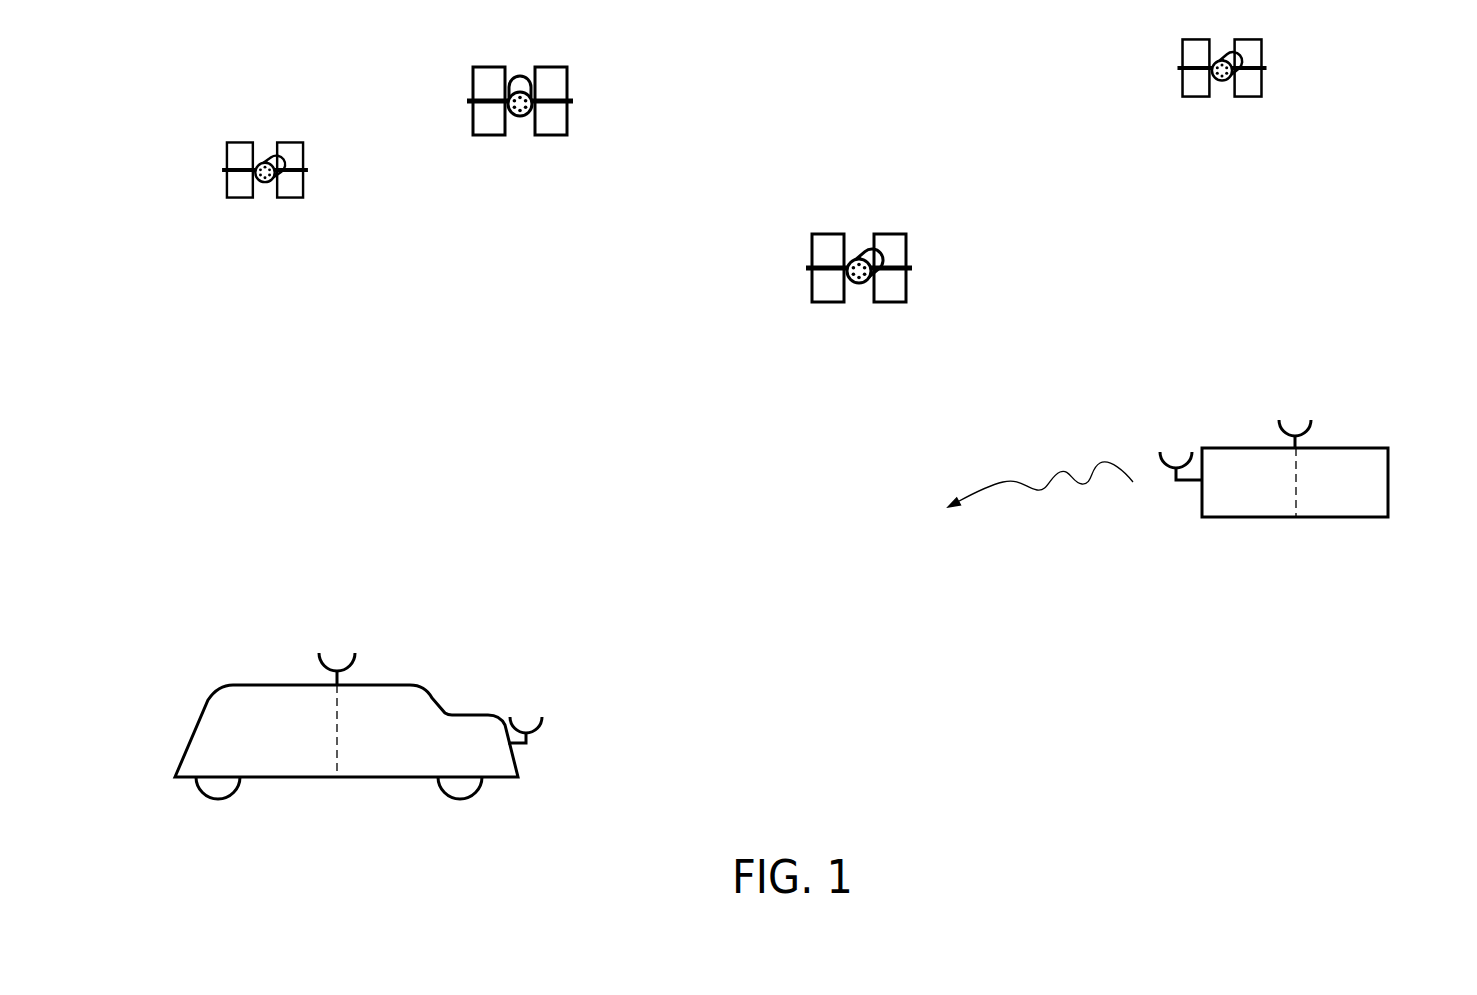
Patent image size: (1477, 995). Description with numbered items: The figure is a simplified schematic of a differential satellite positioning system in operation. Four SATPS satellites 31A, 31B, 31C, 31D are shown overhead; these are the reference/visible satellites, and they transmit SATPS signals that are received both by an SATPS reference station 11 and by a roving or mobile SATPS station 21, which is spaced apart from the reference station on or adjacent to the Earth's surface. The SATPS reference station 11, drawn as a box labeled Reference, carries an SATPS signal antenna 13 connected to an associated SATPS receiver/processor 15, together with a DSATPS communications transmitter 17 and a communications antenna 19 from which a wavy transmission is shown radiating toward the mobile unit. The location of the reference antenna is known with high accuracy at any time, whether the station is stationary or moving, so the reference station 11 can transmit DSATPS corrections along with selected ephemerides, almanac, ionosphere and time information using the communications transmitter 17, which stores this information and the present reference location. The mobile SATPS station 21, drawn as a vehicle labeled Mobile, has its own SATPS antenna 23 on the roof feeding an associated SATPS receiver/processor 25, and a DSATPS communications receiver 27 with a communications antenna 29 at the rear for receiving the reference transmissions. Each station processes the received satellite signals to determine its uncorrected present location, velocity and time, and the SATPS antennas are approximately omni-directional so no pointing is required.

The SATPS reference station 11 is at (1207, 453).
The SATPS signal antenna 13 is at (1310, 418).
The SATPS receiver/processor 15 is at (1352, 498).
The DSATPS communications transmitter 17 is at (1250, 500).
The communications antenna 19 is at (1163, 463).
The mobile SATPS station 21 is at (359, 712).
The SATPS antenna 23 is at (352, 652).
The SATPS receiver/processor 25 is at (293, 760).
The DSATPS communications receiver 27 is at (423, 762).
The communications antenna 29 is at (543, 713).
The SATPS satellite 31A is at (267, 185).
The SATPS satellite 31B is at (515, 122).
The SATPS satellite 31C is at (842, 302).
The SATPS satellite 31D is at (1207, 95).